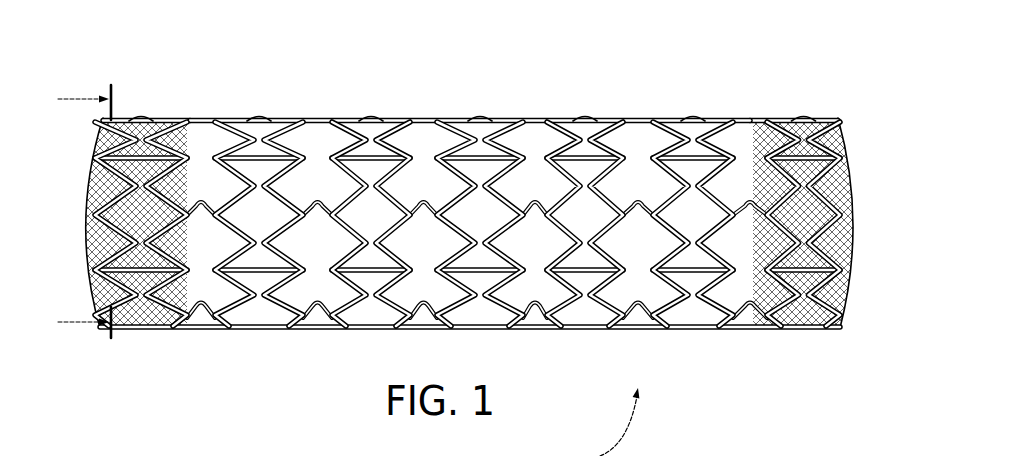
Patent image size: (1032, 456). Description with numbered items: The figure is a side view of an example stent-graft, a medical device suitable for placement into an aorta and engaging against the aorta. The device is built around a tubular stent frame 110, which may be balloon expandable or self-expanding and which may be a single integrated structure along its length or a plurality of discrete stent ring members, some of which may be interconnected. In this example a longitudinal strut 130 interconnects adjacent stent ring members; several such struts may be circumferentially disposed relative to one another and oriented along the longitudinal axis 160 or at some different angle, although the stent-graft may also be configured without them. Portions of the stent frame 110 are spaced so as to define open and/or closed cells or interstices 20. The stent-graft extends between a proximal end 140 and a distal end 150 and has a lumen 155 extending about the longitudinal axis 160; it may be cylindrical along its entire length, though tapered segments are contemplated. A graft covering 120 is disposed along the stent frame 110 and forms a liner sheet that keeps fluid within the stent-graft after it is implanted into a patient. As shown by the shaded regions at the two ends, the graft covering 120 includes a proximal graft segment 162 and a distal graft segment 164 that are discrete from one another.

The interstices 20 is at (366, 201).
The stent frame 110 is at (82, 263).
The graft covering 120 is at (240, 283).
The longitudinal strut 130 is at (152, 117).
The proximal end 140 is at (82, 227).
The distal end 150 is at (845, 137).
The lumen 155 is at (71, 162).
The longitudinal axis 160 is at (82, 192).
The proximal graft segment 162 is at (122, 88).
The distal graft segment 164 is at (828, 100).